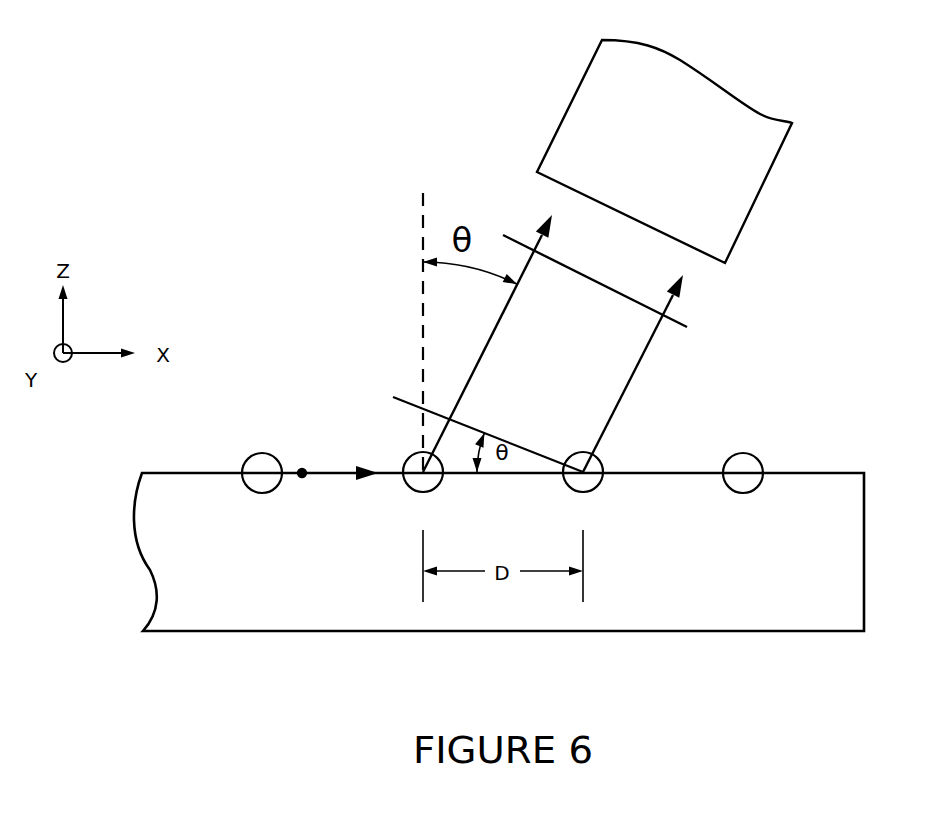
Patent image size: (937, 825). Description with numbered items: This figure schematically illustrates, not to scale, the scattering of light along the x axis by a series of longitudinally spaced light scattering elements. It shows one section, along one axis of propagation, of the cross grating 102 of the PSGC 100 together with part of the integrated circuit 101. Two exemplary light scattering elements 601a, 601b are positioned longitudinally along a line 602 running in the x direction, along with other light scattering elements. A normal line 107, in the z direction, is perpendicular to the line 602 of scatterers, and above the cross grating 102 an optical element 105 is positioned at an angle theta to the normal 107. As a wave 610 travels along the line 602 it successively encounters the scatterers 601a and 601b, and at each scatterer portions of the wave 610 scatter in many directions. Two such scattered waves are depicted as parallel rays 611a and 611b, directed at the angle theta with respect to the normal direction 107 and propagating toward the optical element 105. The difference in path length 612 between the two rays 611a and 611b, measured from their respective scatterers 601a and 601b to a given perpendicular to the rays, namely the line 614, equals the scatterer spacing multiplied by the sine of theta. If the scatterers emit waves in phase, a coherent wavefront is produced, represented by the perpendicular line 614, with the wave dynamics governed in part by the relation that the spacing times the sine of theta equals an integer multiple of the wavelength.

The PSGC 100 is at (203, 194).
The integrated circuit 101 is at (213, 583).
The cross grating 102 is at (274, 323).
The optical element 105 is at (635, 167).
The normal line 107 is at (421, 201).
The wave 610 is at (330, 471).
The light scattering element 601a is at (427, 495).
The light scattering element 601b is at (580, 492).
The line 602 is at (675, 474).
The ray 611a is at (493, 337).
The ray 611b is at (637, 373).
The difference in path length 612 is at (462, 425).
The perpendicular line 614 is at (687, 327).